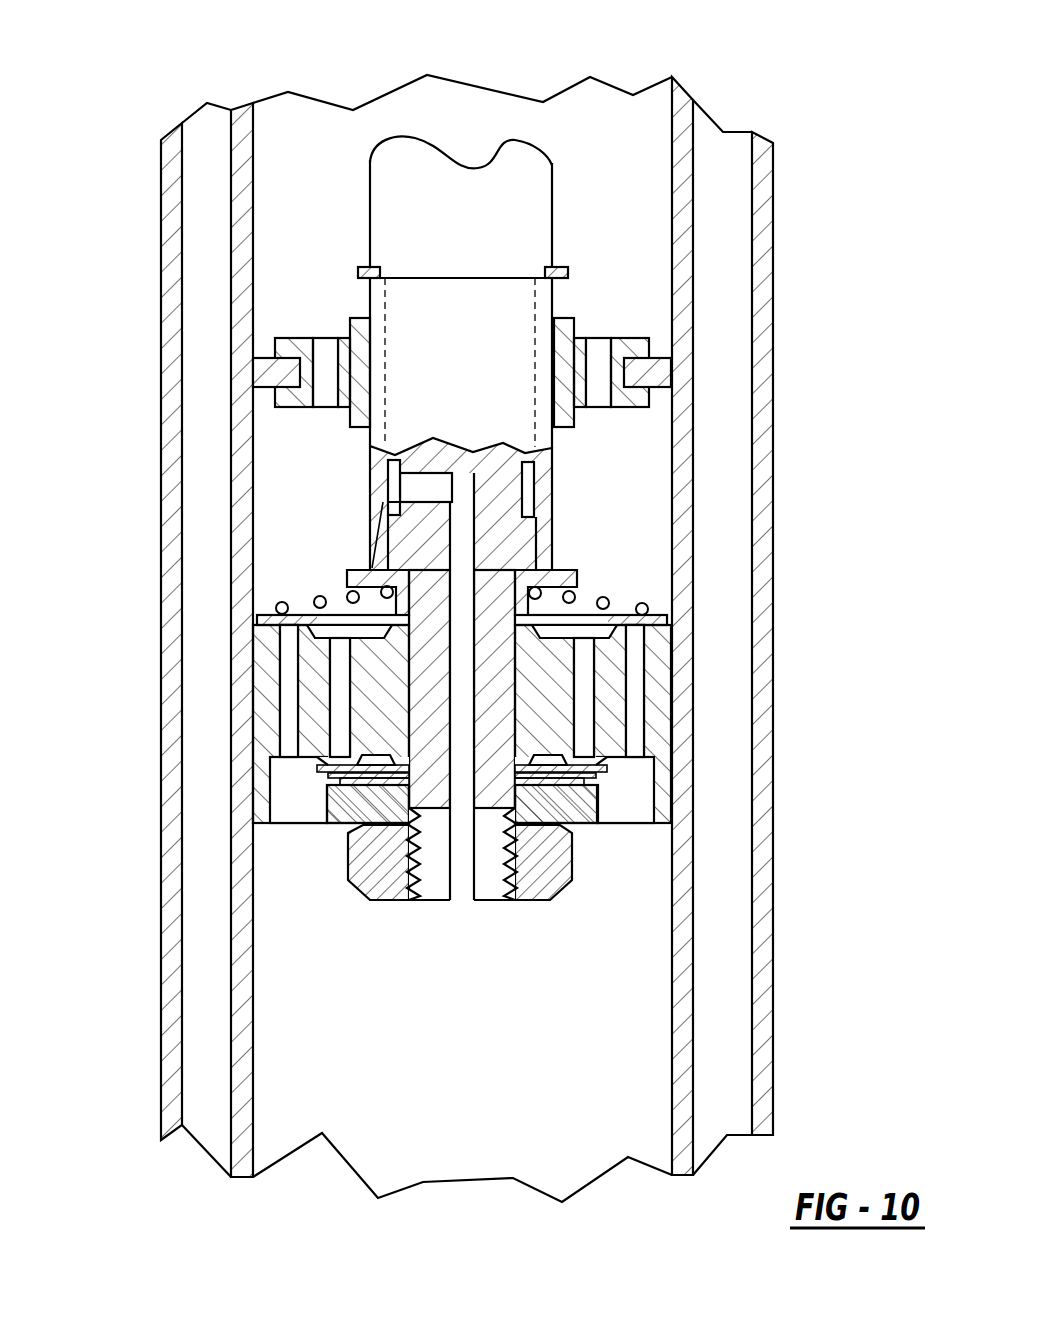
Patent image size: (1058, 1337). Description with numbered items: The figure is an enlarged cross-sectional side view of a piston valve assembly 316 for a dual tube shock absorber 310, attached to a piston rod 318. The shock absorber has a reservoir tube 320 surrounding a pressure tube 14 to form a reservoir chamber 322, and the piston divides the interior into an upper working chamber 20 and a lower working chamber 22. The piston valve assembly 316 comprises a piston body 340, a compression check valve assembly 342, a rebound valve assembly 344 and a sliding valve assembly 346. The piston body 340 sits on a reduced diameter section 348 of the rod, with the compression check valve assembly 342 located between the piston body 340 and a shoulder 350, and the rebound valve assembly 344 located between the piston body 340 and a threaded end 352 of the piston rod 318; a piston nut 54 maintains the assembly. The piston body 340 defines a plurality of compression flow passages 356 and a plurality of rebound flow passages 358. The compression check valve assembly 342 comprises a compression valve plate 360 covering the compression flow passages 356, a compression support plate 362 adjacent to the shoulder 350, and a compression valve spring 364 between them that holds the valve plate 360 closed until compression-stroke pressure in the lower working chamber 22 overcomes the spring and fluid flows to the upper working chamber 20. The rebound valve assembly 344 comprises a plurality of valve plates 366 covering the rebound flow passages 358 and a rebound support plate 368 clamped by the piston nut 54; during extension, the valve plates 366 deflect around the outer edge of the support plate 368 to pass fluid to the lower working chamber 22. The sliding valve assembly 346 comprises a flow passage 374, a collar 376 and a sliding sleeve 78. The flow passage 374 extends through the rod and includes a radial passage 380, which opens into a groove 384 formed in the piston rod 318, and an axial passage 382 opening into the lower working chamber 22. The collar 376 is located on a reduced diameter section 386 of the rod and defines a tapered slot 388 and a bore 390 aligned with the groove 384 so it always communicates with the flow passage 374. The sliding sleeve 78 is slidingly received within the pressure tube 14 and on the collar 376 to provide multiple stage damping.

The dual tube shock absorber 310 is at (800, 77).
The reservoir tube 320 is at (760, 355).
The pressure tube 14 is at (683, 470).
The piston rod 318 is at (460, 240).
The upper working chamber 20 is at (612, 172).
The lower working chamber 22 is at (420, 1070).
The sliding sleeve 78 is at (633, 333).
The radial passage 380 is at (422, 490).
The flow passage 374 is at (455, 490).
The bore 390 is at (388, 472).
The collar 376 is at (535, 488).
The tapered slot 388 is at (383, 500).
The groove 384 is at (536, 500).
The reduced diameter section 386 is at (415, 525).
The compression support plate 362 is at (347, 576).
The compression valve plate 360 is at (257, 619).
The compression valve spring 364 is at (318, 597).
The piston body 340 is at (660, 712).
The rebound flow passages 358 is at (583, 650).
The valve plates 366 is at (317, 775).
The rebound support plate 368 is at (333, 798).
The piston nut 54 is at (543, 880).
The axial passage 382 is at (457, 860).
The sliding valve assembly 346 is at (305, 288).
The piston valve assembly 316 is at (200, 678).
The rebound valve assembly 344 is at (295, 863).
The compression check valve assembly 342 is at (655, 583).
The shoulder 350 is at (550, 567).
The reduced diameter section 348 is at (500, 685).
The compression flow passages 356 is at (633, 738).
The threaded end 352 is at (487, 853).
The reservoir chamber 322 is at (735, 1032).